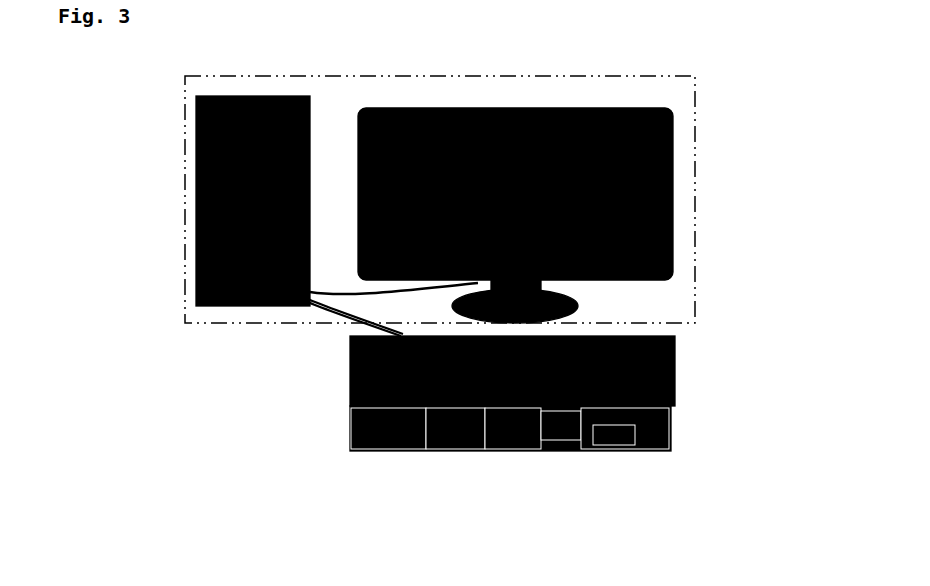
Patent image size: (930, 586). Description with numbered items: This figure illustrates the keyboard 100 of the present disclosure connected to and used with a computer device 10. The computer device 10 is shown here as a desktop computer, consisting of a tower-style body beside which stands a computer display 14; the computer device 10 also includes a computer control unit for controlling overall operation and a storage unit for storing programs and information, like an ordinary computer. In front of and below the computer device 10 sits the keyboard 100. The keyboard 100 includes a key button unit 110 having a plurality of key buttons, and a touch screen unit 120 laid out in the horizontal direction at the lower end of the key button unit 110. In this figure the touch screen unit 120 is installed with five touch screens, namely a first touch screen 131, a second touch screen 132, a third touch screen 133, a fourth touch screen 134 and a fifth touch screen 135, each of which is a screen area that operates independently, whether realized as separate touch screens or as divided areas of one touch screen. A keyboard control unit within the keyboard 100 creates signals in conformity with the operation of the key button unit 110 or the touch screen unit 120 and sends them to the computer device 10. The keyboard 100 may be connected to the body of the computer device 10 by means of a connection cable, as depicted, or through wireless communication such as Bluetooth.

The computer device 10 is at (177, 172).
The computer display 14 is at (665, 172).
The keyboard 100 is at (501, 441).
The key button unit 110 is at (667, 360).
The touch screen unit 120 is at (582, 476).
The first touch screen 131 is at (637, 428).
The second touch screen 132 is at (503, 428).
The third touch screen 133 is at (392, 428).
The fourth touch screen 134 is at (560, 428).
The fifth touch screen 135 is at (447, 428).